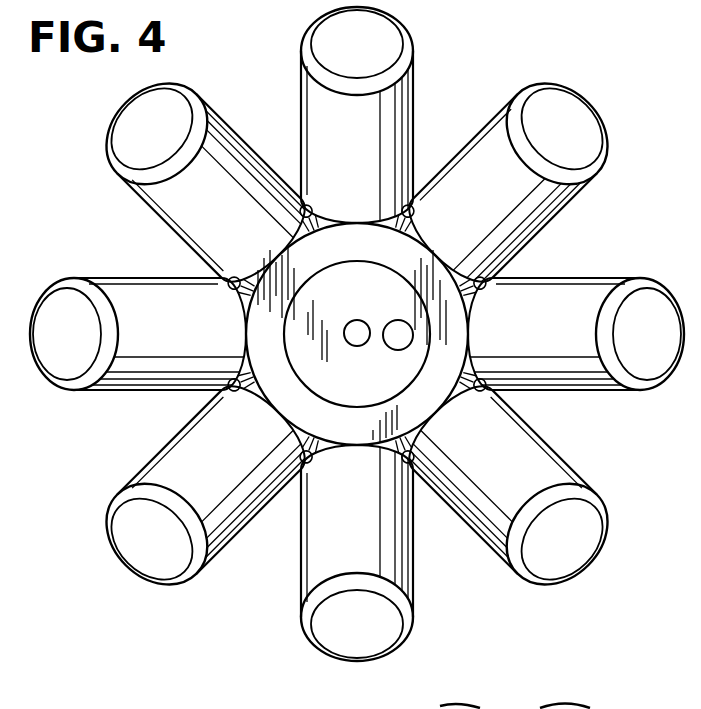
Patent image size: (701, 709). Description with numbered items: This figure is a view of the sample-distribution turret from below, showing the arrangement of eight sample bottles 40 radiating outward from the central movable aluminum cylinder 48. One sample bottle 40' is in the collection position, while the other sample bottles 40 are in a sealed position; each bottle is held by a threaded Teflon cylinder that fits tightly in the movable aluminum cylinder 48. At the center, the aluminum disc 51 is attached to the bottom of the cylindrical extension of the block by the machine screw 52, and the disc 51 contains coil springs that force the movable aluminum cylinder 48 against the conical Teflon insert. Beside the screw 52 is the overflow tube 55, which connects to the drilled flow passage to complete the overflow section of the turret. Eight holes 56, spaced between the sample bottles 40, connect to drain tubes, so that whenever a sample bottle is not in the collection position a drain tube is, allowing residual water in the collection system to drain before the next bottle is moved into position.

The sample bottle 40 is at (385, 334).
The sample bottle 40' is at (138, 353).
The movable aluminum cylinder 48 is at (263, 352).
The aluminum disc 51 is at (328, 373).
The machine screw 52 is at (356, 327).
The overflow tube 55 is at (398, 337).
The hole 56 is at (486, 280).